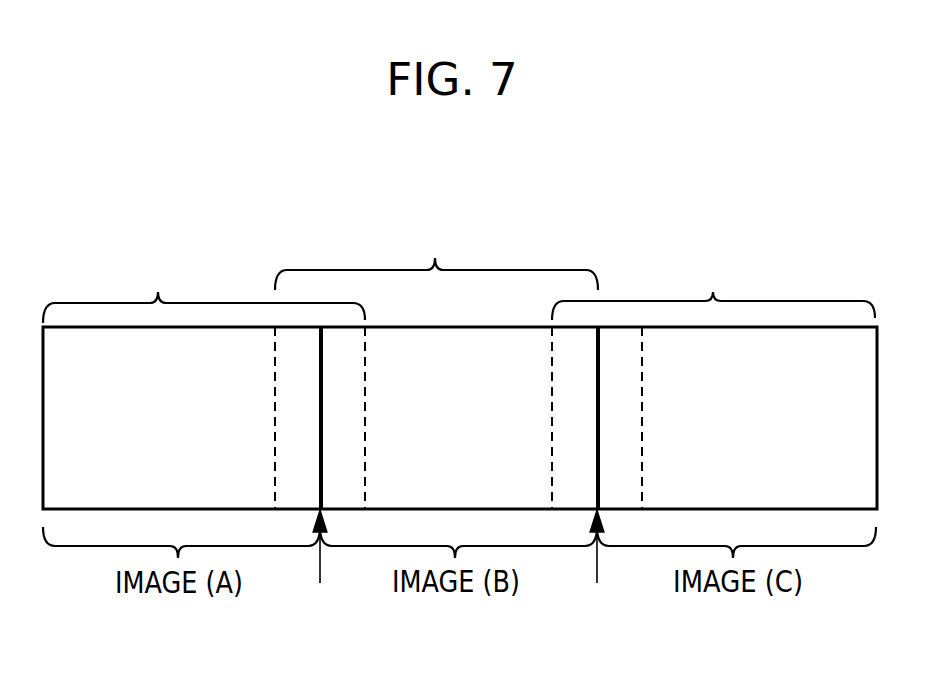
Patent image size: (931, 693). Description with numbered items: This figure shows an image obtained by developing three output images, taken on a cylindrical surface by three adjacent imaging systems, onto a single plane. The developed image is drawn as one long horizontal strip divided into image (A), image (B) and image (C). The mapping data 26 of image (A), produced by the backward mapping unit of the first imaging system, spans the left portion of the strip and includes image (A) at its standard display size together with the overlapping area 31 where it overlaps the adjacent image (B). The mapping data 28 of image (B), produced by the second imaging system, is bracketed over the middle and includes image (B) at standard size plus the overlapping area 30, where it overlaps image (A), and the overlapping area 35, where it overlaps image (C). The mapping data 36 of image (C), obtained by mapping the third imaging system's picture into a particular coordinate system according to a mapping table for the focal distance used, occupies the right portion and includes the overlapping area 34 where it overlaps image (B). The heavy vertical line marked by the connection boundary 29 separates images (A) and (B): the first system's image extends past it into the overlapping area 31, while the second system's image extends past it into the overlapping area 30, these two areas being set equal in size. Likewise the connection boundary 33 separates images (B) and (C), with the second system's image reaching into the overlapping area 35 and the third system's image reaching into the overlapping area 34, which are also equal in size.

The mapping data of image (A) 26 is at (204, 288).
The mapping data of image (B) 28 is at (436, 254).
The mapping data of image (C) 36 is at (713, 286).
The connection boundary 29 is at (323, 563).
The connection boundary 33 is at (600, 563).
The overlapping area 30 is at (293, 419).
The overlapping area 31 is at (352, 412).
The overlapping area 34 is at (568, 465).
The overlapping area 35 is at (627, 458).